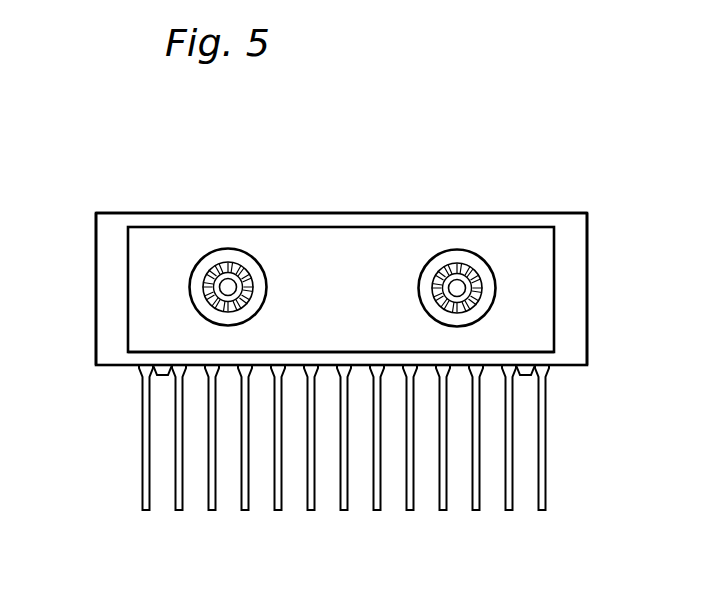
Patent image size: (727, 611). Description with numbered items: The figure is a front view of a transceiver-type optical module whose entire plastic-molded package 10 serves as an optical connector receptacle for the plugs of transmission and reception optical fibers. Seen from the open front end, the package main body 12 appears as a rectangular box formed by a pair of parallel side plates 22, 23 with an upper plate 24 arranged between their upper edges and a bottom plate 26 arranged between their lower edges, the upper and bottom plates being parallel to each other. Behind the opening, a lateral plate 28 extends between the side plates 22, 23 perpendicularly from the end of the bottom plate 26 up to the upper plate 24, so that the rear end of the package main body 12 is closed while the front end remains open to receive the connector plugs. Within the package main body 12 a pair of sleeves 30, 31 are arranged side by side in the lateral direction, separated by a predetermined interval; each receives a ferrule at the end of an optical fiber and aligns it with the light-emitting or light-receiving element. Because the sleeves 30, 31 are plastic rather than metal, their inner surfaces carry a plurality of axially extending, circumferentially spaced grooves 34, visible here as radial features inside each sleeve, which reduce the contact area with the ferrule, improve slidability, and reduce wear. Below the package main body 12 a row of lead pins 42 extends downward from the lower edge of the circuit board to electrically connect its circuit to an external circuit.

The package 10 is at (610, 219).
The package main body 12 is at (89, 240).
The side plate 22 is at (580, 302).
The side plate 23 is at (108, 305).
The upper plate 24 is at (493, 219).
The bottom plate 26 is at (495, 351).
The lateral plate 28 is at (378, 246).
The sleeve 30 is at (493, 268).
The sleeve 31 is at (250, 256).
The grooves 34 is at (216, 280).
The lead pins 42 is at (142, 475).